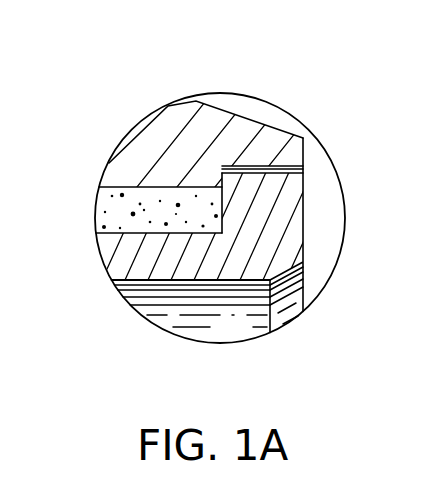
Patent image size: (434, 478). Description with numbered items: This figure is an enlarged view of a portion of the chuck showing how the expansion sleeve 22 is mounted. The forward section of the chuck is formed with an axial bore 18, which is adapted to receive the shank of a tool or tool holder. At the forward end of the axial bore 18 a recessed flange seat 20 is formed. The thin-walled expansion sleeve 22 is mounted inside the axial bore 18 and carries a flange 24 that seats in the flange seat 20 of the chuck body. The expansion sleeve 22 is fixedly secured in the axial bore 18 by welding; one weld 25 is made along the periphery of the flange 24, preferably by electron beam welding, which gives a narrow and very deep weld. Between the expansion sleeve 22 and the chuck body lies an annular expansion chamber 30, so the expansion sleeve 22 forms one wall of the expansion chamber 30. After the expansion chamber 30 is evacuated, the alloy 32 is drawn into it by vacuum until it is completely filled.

The axial bore 18 is at (244, 320).
The recessed flange seat 20 is at (219, 174).
The expansion sleeve 22 is at (184, 262).
The flange 24 is at (291, 194).
The weld 25 is at (264, 165).
The annular expansion chamber 30 is at (121, 188).
The alloy 32 is at (131, 226).